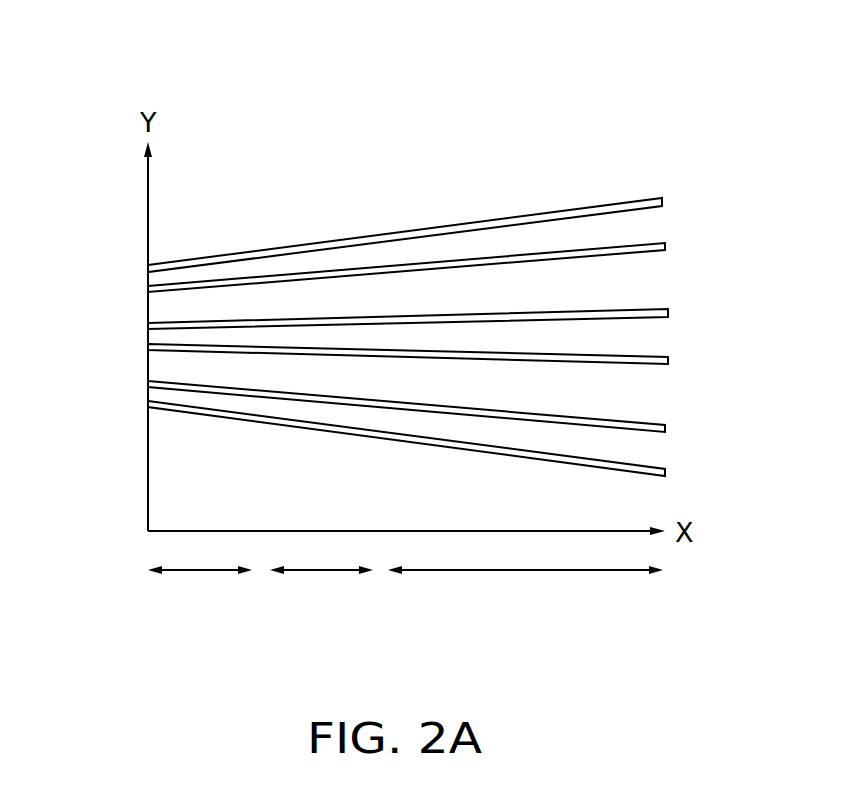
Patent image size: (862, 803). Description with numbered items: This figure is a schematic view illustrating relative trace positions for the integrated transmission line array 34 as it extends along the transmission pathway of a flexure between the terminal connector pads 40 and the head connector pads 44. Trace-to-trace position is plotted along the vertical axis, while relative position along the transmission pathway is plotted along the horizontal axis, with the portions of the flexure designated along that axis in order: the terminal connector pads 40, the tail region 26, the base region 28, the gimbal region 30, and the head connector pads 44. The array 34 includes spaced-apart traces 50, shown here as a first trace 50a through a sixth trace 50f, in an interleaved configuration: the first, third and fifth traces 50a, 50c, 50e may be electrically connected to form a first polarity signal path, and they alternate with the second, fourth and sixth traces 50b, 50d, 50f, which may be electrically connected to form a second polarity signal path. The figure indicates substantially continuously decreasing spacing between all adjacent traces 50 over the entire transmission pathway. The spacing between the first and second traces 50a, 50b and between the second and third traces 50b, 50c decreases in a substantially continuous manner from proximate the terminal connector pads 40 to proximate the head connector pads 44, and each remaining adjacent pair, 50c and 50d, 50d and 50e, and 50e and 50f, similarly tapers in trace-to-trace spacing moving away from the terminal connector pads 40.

The first integrated transmission line array 34 is at (300, 193).
The traces 50 is at (385, 317).
The first trace 50a is at (477, 222).
The second trace 50b is at (533, 254).
The third trace 50c is at (570, 313).
The fourth trace 50d is at (640, 357).
The fifth trace 50e is at (632, 425).
The sixth trace 50f is at (643, 467).
The head connector pads 44 is at (147, 583).
The gimbal region 30 is at (202, 588).
The base region 28 is at (318, 588).
The tail region 26 is at (503, 587).
The terminal connector pads 40 is at (666, 582).